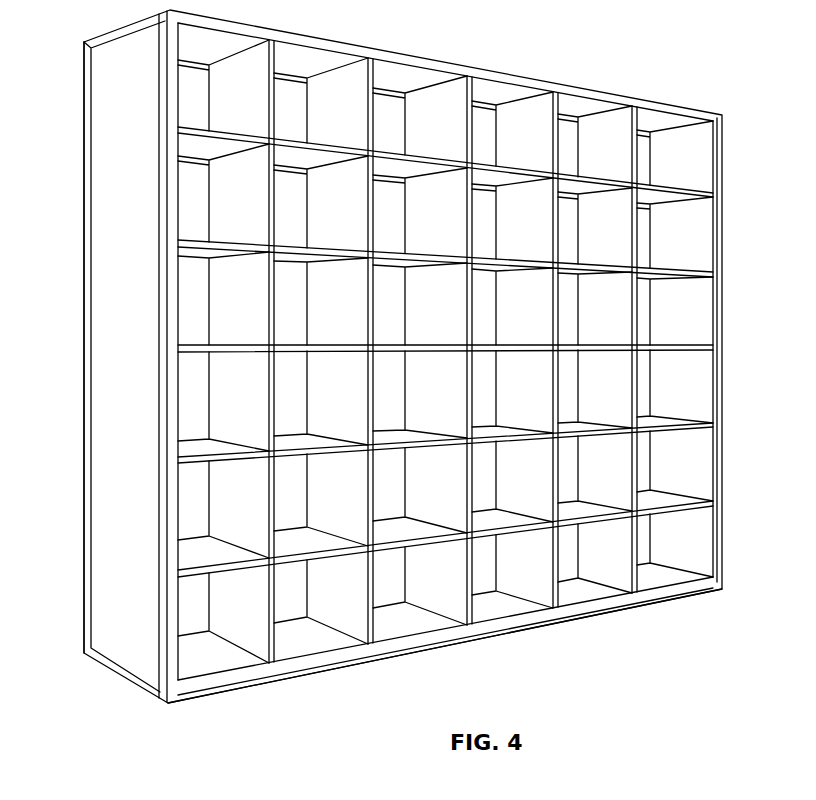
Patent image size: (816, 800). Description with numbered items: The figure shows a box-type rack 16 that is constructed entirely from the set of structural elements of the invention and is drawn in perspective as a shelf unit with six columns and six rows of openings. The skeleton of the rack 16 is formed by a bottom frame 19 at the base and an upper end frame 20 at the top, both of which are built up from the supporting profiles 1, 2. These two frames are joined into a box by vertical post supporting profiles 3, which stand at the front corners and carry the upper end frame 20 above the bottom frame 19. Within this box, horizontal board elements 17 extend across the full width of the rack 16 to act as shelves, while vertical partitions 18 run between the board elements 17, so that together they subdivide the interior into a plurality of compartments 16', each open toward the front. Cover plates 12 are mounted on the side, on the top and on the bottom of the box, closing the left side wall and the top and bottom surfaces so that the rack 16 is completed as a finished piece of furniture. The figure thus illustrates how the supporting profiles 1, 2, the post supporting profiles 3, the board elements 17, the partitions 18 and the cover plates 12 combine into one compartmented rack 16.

The supporting profile 1 is at (97, 35).
The supporting profile 2 is at (472, 107).
The post supporting profile 3 is at (84, 230).
The cover plate 12 is at (110, 140).
The box-type rack 16 is at (49, 347).
The compartment 16' is at (373, 351).
The board element 17 is at (685, 428).
The partition 18 is at (605, 535).
The bottom frame 19 is at (677, 593).
The upper end frame 20 is at (629, 100).